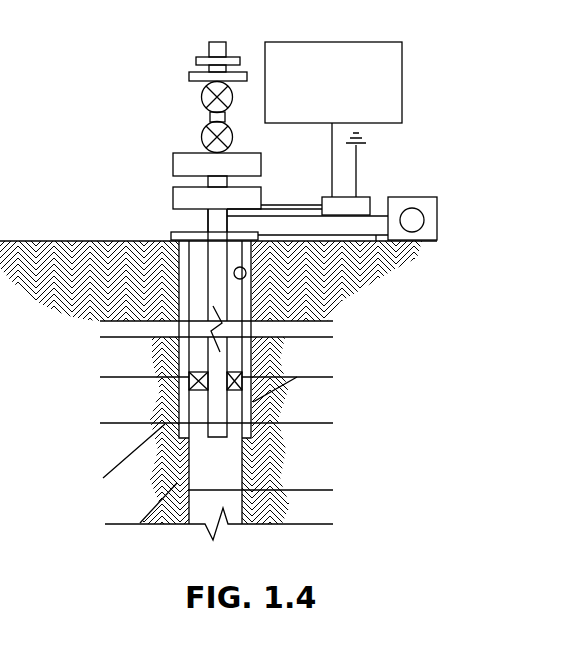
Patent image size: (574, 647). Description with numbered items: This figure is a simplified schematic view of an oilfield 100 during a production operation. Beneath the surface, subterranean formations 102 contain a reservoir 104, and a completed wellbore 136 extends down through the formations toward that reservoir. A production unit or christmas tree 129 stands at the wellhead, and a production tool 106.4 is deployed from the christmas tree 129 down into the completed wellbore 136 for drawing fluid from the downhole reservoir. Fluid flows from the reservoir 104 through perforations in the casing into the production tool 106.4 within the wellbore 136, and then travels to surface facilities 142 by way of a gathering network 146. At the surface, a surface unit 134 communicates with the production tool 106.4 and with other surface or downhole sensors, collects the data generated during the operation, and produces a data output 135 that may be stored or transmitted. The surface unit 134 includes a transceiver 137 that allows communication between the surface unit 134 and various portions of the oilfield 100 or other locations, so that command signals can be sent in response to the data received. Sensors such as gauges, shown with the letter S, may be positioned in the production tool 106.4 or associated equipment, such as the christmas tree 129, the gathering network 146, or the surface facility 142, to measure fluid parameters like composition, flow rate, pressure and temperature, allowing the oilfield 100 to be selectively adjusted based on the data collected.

The oilfield 100 is at (98, 86).
The subterranean formations 102 is at (363, 393).
The reservoir 104 is at (330, 475).
The production tool 106.4 is at (205, 410).
The christmas tree 129 is at (215, 41).
The surface unit 134 is at (321, 198).
The data output 135 is at (333, 41).
The wellbore 136 is at (246, 270).
The transceiver 137 is at (362, 157).
The surface facilities 142 is at (438, 217).
The gathering network 146 is at (376, 242).